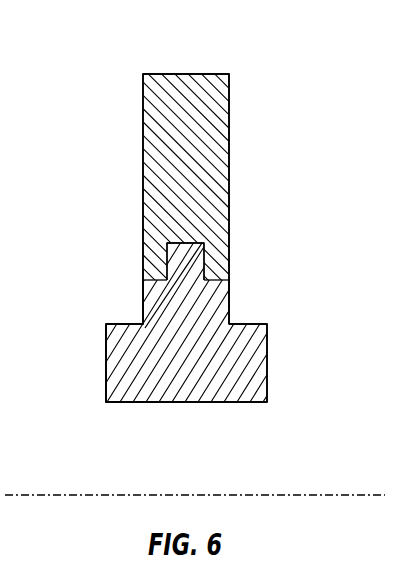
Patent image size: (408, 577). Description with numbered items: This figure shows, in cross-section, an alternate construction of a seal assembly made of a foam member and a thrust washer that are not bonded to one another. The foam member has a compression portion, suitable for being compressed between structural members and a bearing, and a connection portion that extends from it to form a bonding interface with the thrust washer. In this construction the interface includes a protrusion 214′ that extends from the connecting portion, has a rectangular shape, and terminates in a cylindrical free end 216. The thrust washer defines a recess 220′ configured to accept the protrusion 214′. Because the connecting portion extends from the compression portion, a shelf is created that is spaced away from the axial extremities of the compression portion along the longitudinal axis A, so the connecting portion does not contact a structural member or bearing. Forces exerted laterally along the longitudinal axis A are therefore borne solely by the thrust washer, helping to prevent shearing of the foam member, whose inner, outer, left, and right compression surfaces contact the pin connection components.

The protrusion 214′ is at (183, 267).
The cylindrical free end 216 is at (191, 243).
The recess 220′ is at (205, 255).
The longitudinal axis A is at (312, 494).